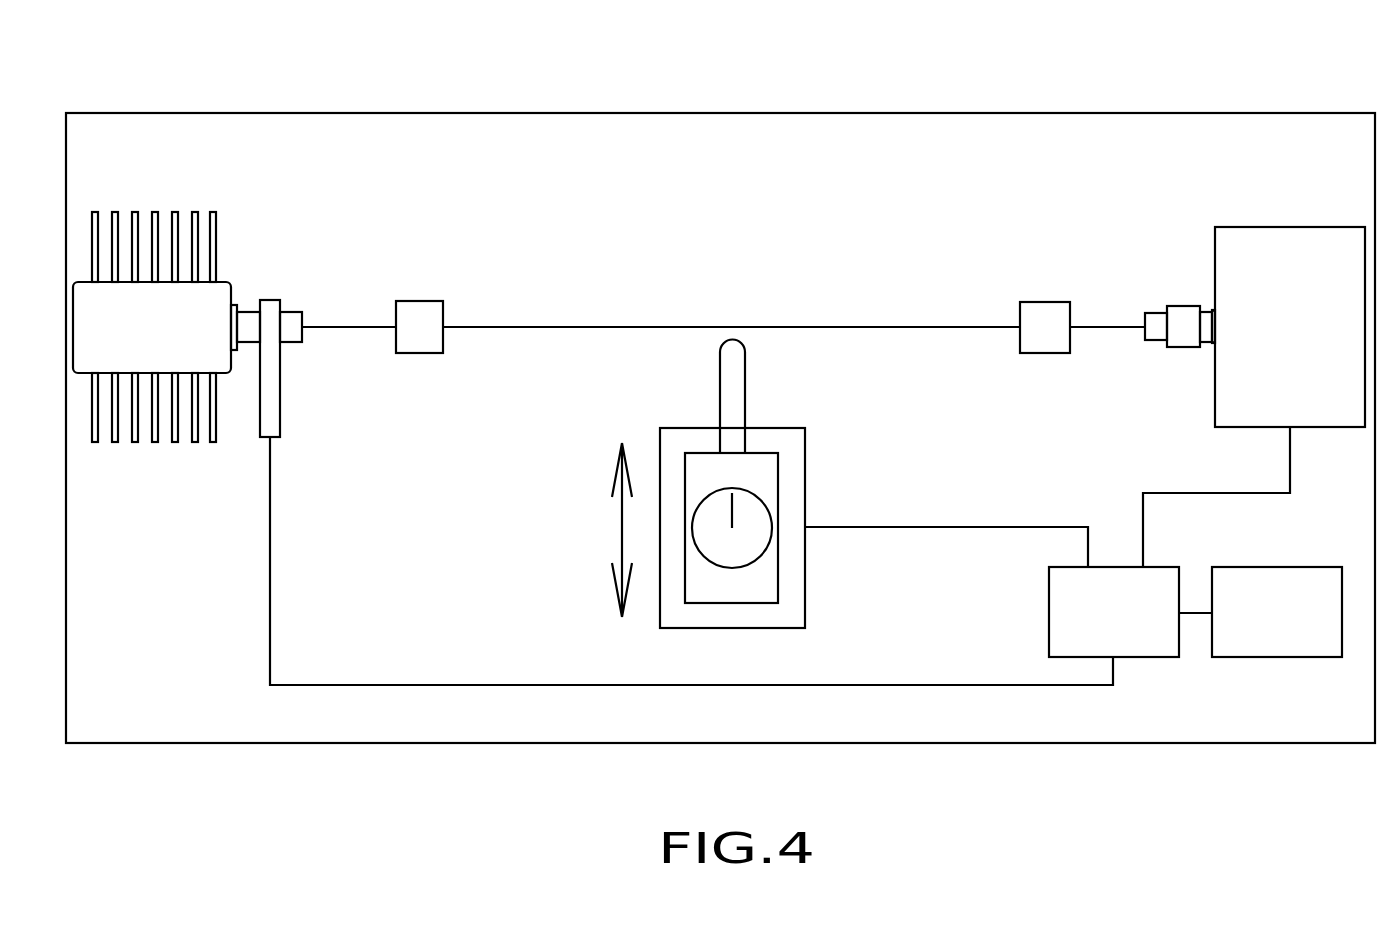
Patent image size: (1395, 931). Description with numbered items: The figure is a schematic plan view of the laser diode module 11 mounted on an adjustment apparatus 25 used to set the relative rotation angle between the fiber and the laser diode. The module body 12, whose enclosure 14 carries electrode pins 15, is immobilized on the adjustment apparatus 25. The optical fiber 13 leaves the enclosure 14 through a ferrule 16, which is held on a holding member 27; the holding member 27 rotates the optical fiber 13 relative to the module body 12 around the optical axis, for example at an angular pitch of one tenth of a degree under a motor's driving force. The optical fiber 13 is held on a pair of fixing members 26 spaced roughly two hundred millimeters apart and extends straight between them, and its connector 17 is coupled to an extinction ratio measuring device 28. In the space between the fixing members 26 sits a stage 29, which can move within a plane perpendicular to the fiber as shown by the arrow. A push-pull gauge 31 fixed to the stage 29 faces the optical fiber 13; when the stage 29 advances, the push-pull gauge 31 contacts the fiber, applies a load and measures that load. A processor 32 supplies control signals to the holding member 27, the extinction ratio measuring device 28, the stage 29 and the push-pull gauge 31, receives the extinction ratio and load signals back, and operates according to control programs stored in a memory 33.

The adjustment apparatus 25 is at (870, 113).
The laser diode module 11 is at (298, 237).
The module body 12 is at (215, 212).
The enclosure 14 is at (231, 283).
The electrode pins 15 is at (95, 212).
The ferrule 16 is at (297, 312).
The holding member 27 is at (281, 422).
The optical fiber 13 is at (878, 325).
The fixing members 26 is at (432, 301).
The connector 17 is at (1190, 306).
The extinction ratio measuring device 28 is at (1253, 227).
The stage 29 is at (741, 484).
The push-pull gauge 31 is at (780, 473).
The processor 32 is at (1049, 588).
The memory 33 is at (1285, 567).